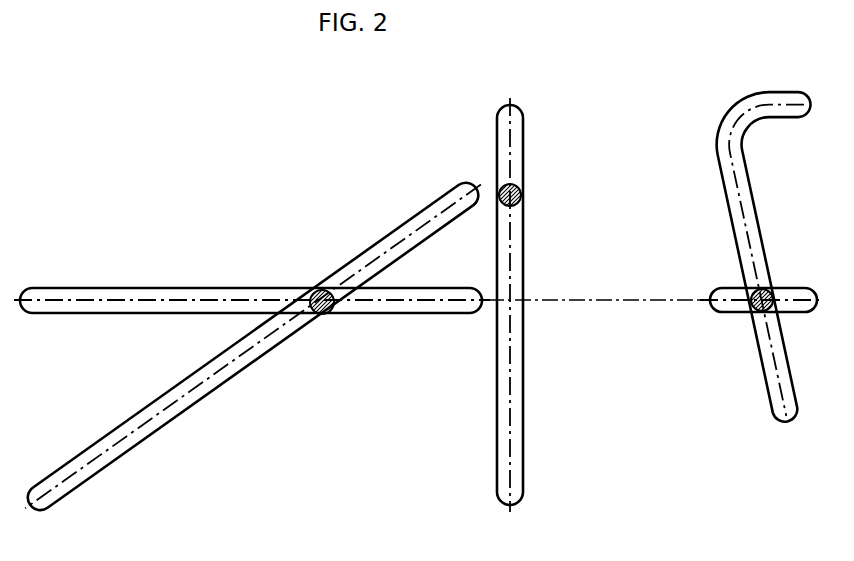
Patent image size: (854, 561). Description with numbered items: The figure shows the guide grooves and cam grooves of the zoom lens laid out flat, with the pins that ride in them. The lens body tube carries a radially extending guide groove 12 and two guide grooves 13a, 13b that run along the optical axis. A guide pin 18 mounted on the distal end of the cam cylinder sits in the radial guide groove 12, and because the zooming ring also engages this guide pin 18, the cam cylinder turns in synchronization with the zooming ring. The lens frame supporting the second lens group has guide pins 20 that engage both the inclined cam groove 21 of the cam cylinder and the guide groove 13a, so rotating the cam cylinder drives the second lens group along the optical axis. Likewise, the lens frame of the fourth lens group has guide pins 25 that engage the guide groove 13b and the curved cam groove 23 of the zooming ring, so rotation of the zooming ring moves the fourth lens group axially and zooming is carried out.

The radial guide groove 12 is at (523, 402).
The guide groove 13a is at (133, 288).
The guide groove 13b is at (793, 289).
The guide pin 18 is at (521, 191).
The guide pins 20 is at (325, 313).
The cam groove 21 is at (135, 418).
The cam groove 23 is at (719, 192).
The guide pins 25 is at (752, 312).